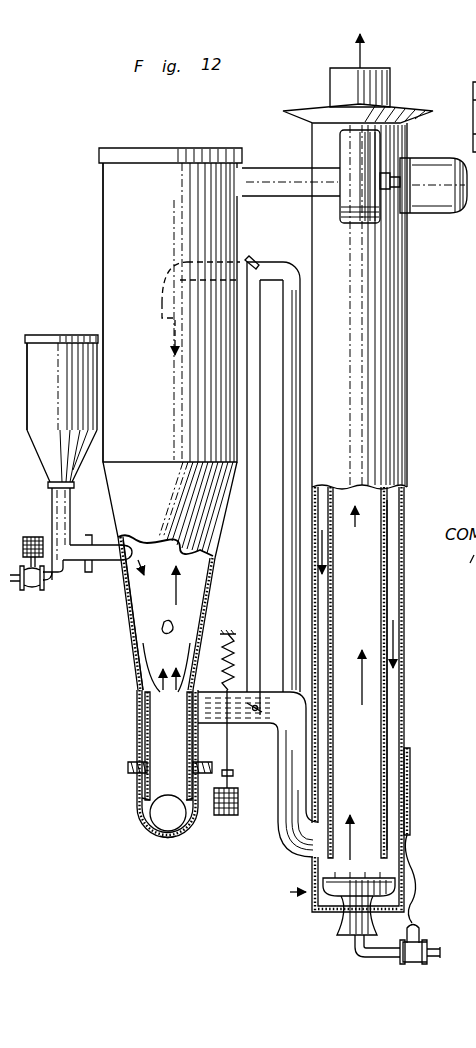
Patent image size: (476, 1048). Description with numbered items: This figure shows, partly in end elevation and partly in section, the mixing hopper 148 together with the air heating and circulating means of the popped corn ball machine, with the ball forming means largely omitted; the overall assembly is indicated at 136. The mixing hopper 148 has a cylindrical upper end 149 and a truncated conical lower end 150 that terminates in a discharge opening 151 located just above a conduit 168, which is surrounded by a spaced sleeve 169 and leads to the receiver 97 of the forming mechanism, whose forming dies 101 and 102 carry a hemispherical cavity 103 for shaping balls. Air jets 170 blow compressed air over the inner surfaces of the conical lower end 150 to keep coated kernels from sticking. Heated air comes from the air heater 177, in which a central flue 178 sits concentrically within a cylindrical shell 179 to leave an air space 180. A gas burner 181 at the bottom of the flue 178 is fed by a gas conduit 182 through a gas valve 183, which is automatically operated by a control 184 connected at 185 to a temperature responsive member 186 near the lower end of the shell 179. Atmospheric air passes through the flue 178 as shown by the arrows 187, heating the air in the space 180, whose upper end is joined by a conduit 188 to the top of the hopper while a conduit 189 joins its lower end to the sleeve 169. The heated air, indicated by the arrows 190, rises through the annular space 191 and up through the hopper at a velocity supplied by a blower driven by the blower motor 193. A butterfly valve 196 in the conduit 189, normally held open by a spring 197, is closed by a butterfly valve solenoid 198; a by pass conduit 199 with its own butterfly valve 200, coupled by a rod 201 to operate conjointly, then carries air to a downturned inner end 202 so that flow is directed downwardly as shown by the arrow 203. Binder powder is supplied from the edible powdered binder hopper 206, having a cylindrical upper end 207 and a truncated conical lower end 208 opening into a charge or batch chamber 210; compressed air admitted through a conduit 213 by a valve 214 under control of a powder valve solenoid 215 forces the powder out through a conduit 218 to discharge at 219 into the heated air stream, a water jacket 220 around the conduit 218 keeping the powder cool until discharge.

The cyclone separator 136 is at (101, 127).
The mixing hopper 148 is at (89, 227).
The cylindrical upper end 149 is at (103, 262).
The inner end 202 is at (162, 305).
The arrow 203 is at (177, 336).
The water jacket 220 is at (118, 536).
The truncated conical lower end 150 is at (133, 606).
The discharge opening 151 is at (152, 648).
The arrows 190 is at (178, 584).
The air jets 170 is at (180, 624).
The discharge 219 is at (154, 577).
The annular space 191 is at (150, 684).
The sleeve 169 is at (137, 707).
The conduit 168 is at (145, 733).
The hemispherical cavity 103 is at (160, 817).
The forming die 101 is at (158, 797).
The receiver 97 is at (170, 838).
The butterfly valve 196 is at (248, 725).
The spring 197 is at (224, 690).
The butterfly valve solenoid 198 is at (226, 816).
The rod 201 is at (262, 410).
The butterfly valve 200 is at (250, 261).
The by pass conduit 199 is at (292, 385).
The conduit 189 is at (288, 798).
The conduit 188 is at (283, 162).
The air heater 177 is at (411, 384).
The arrows 187 is at (365, 53).
The forming die 102 is at (357, 213).
The blower motor 193 is at (431, 214).
The cylindrical shell 179 is at (403, 703).
The central flue 178 is at (388, 520).
The air space 180 is at (396, 685).
The temperature responsive member 186 is at (411, 804).
The gas burner 181 is at (322, 894).
The gas valve 183 is at (405, 962).
The control 184 is at (420, 935).
The gas conduit 182 is at (433, 960).
The connection 185 is at (417, 878).
The edible powdered binder hopper 206 is at (49, 332).
The cylindrical upper end 207 is at (27, 362).
The truncated conical lower end 208 is at (41, 463).
The charge or batch chamber 210 is at (70, 522).
The conduit 218 is at (79, 545).
The conduit 213 is at (54, 584).
The valve 214 is at (31, 588).
The powder valve solenoid 215 is at (30, 540).